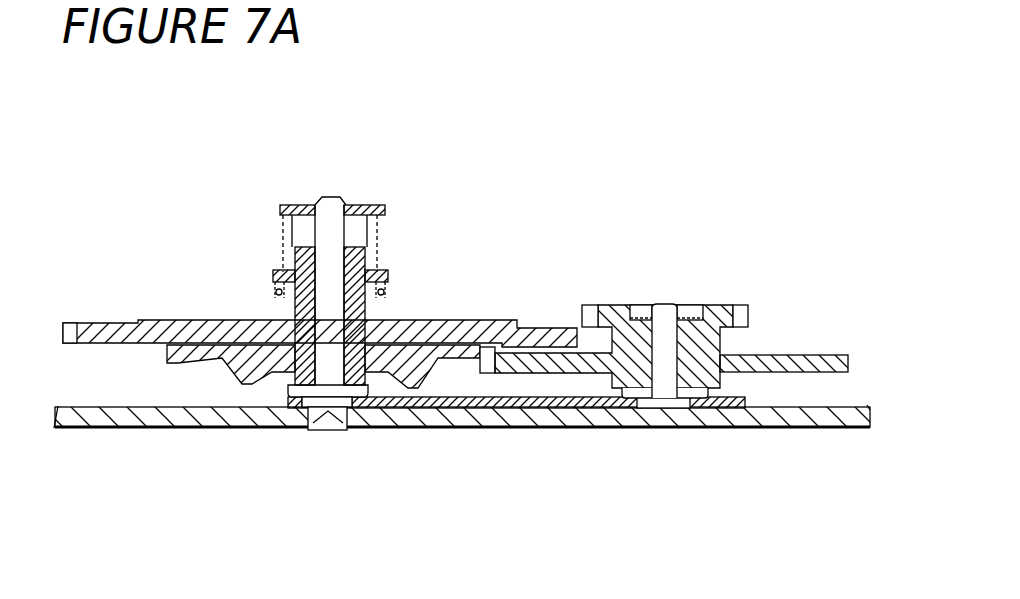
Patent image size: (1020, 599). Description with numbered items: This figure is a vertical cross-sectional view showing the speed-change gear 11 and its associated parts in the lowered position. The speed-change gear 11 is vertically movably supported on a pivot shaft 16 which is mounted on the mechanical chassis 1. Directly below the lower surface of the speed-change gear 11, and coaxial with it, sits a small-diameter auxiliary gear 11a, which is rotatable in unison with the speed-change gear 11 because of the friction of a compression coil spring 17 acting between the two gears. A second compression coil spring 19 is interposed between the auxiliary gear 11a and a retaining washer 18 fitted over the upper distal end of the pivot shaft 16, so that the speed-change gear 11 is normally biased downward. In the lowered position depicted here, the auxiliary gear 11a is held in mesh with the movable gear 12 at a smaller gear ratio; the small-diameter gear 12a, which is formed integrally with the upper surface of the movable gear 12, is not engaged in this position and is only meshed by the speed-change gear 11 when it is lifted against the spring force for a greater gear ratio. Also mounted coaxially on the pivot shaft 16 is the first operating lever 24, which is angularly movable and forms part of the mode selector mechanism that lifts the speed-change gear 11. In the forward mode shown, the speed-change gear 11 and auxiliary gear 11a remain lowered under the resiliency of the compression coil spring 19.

The mechanical chassis 1 is at (243, 428).
The speed-change gear 11 is at (452, 320).
The small-diameter auxiliary gear 11a is at (453, 356).
The movable gear 12 is at (808, 355).
The small-diameter gear 12a is at (752, 308).
The pivot shaft 16 is at (335, 205).
The compression coil spring 17 is at (274, 290).
The retaining washer 18 is at (372, 207).
The compression coil spring 19 is at (287, 221).
The first operating lever 24 is at (556, 409).